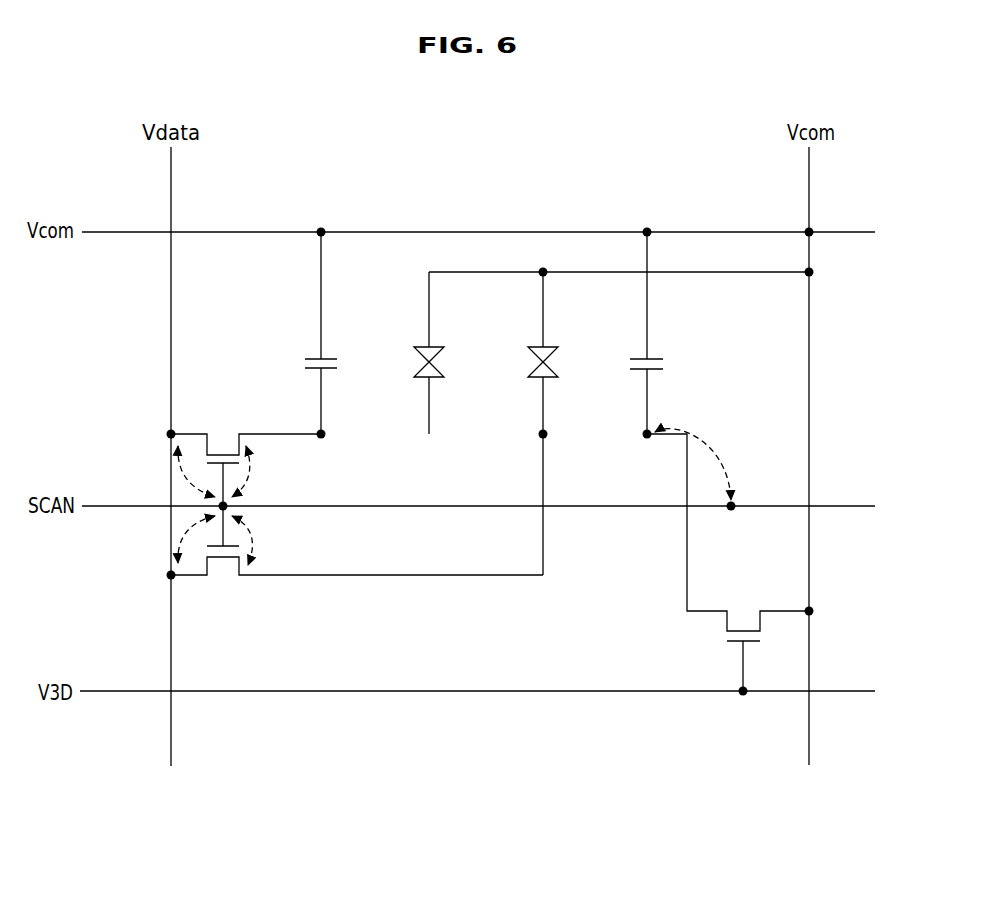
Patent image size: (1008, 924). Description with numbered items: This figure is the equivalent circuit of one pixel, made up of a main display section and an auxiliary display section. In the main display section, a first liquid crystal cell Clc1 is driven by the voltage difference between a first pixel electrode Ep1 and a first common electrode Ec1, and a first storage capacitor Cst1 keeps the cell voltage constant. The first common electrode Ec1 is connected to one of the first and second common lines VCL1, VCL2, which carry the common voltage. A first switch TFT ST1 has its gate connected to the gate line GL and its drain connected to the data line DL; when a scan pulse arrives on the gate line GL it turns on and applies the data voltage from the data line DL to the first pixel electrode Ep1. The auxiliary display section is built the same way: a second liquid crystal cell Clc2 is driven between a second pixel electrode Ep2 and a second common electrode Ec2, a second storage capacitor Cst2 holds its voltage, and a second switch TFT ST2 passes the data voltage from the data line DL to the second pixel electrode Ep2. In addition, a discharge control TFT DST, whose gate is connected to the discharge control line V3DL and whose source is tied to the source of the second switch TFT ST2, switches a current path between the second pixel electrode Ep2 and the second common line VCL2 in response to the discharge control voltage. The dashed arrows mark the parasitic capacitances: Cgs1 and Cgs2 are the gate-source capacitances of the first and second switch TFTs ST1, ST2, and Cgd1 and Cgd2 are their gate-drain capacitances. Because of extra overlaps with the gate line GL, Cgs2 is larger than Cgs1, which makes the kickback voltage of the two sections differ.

The data line DL is at (172, 170).
The first common line VCL1 is at (128, 234).
The second common line VCL2 is at (810, 172).
The gate line GL is at (107, 508).
The discharge control line V3DL is at (132, 693).
The first storage capacitor Cst1 is at (346, 333).
The second storage capacitor Cst2 is at (671, 333).
The first liquid crystal cell Clc1 is at (453, 353).
The second liquid crystal cell Clc2 is at (567, 423).
The first common electrode Ec1 is at (432, 347).
The second common electrode Ec2 is at (545, 347).
The first pixel electrode Ep1 is at (432, 377).
The second pixel electrode Ep2 is at (545, 377).
The first switch TFT ST1 is at (246, 459).
The second switch TFT ST2 is at (357, 555).
The discharge control TFT DST is at (728, 562).
The gate-drain parasitic capacitance of the first switch TFT Cgd1 is at (175, 471).
The gate-drain parasitic capacitance of the second switch TFT Cgd2 is at (175, 539).
The gate-source parasitic capacitance of the first switch TFT Cgs1 is at (267, 471).
The gate-source parasitic capacitance of the second switch TFT Cgs2 is at (501, 491).